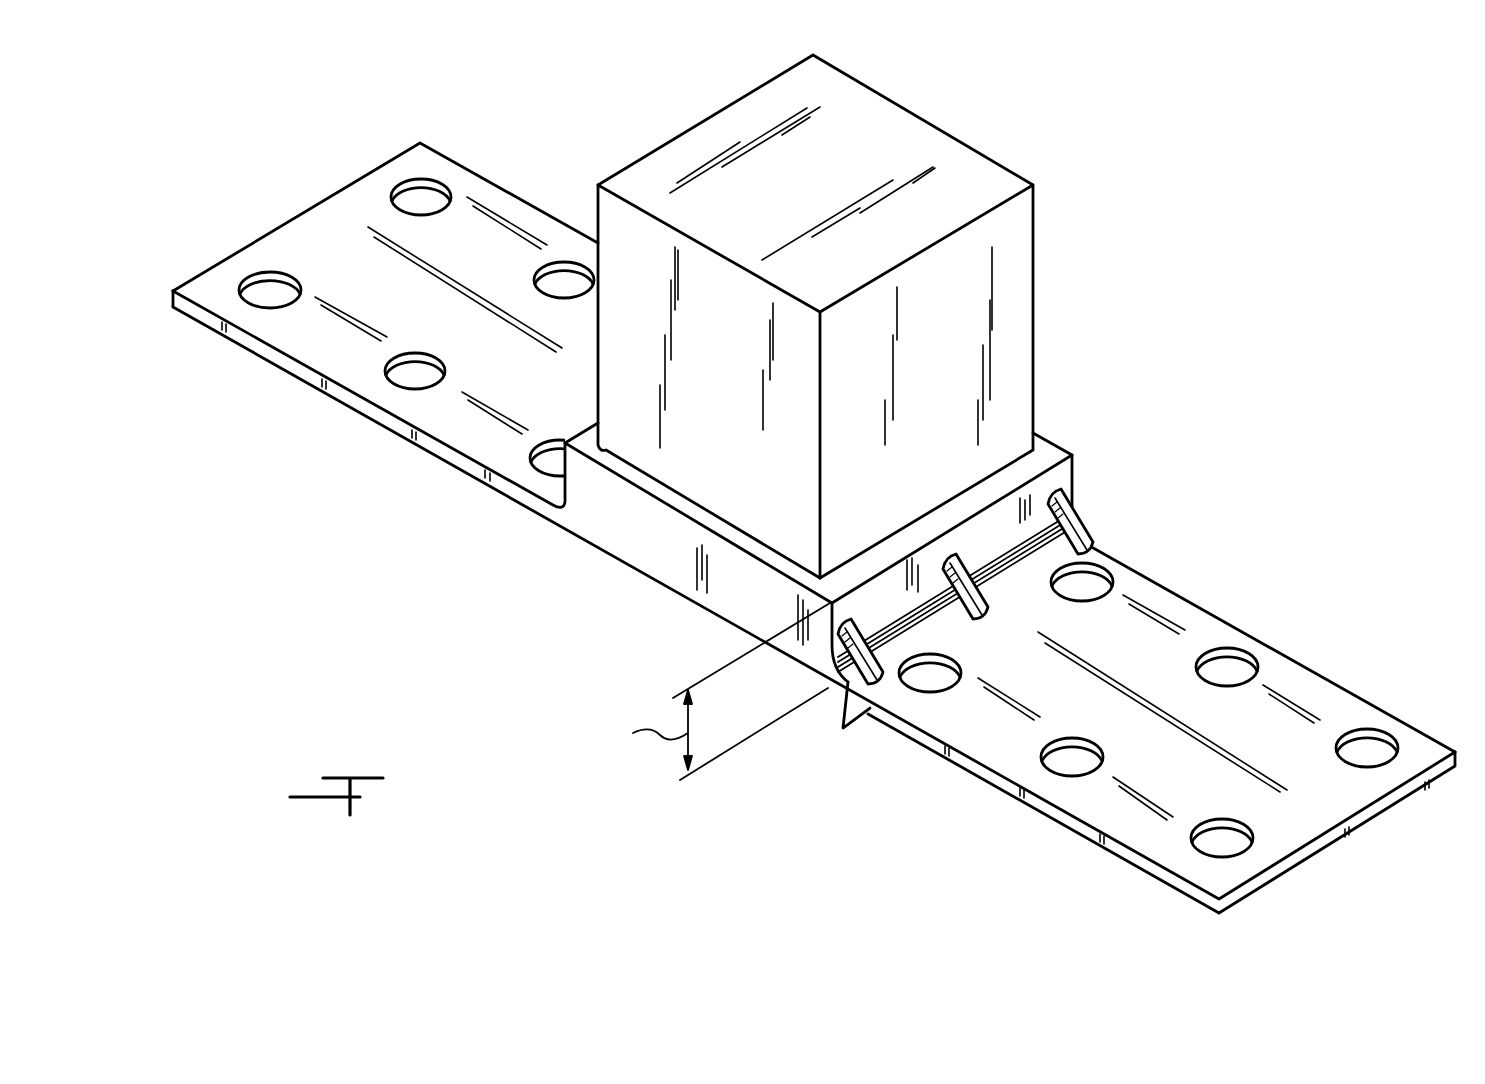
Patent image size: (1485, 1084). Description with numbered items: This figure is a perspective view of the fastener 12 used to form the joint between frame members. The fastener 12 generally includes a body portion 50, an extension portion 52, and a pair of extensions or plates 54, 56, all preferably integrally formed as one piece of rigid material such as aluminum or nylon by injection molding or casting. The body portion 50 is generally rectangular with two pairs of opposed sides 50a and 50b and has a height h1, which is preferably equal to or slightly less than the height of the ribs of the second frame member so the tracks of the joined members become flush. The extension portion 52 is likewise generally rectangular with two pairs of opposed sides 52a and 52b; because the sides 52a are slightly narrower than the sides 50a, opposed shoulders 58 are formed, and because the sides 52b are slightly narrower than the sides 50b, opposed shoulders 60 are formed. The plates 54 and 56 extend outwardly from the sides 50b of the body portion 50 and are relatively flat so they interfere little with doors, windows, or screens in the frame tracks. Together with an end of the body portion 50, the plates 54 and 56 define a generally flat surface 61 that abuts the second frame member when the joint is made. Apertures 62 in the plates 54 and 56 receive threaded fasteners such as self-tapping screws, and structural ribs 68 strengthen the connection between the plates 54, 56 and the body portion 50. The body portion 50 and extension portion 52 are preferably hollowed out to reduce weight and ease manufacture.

The fastener 12 is at (1188, 124).
The body portion 50 is at (643, 576).
The sides of the body portion 50a is at (628, 538).
The sides of the body portion 50b is at (1050, 487).
The extension portion 52 is at (1013, 300).
The sides of the extension portion 52a is at (774, 523).
The sides of the extension portion 52b is at (1008, 225).
The plate 54 is at (1188, 607).
The plate 56 is at (315, 243).
The shoulders 58 is at (1060, 447).
The shoulders 60 is at (607, 470).
The flat surface 61 is at (957, 753).
The apertures 62 is at (400, 370).
The structural ribs 68 is at (1078, 520).